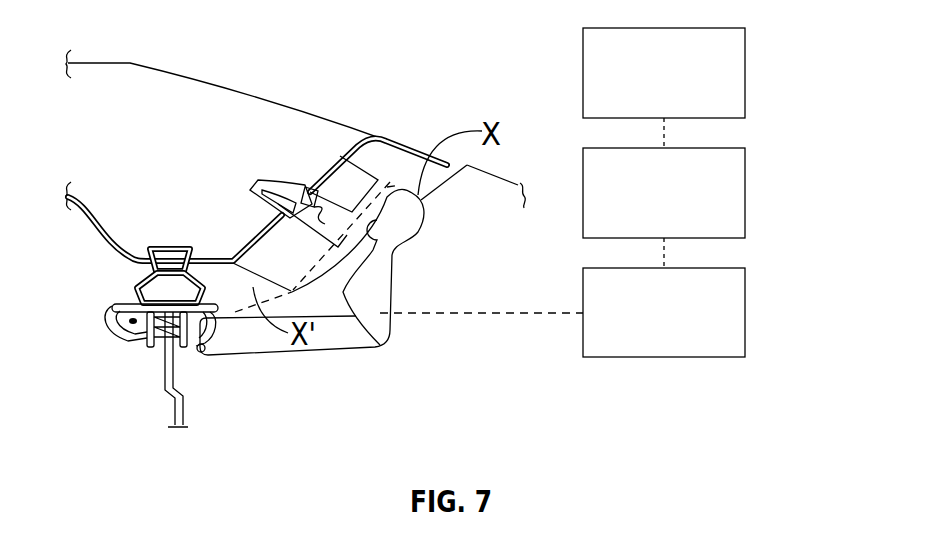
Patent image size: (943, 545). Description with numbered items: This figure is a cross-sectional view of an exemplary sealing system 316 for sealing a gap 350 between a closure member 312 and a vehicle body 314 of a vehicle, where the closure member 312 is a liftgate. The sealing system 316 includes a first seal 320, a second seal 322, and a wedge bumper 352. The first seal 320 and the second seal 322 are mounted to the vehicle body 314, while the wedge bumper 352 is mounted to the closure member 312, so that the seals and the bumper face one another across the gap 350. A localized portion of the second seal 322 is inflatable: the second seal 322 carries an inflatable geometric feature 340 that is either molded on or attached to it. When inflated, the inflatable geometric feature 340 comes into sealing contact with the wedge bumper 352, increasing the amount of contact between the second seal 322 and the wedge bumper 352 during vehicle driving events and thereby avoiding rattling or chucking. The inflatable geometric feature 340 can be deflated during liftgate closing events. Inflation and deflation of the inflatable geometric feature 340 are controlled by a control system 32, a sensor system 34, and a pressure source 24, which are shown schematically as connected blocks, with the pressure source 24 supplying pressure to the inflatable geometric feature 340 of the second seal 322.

The closure member 312 is at (197, 78).
The sealing system 316 is at (384, 152).
The wedge bumper 352 is at (345, 177).
The inflatable geometric feature 340 is at (377, 220).
The vehicle body 314 is at (390, 263).
The second seal 322 is at (382, 344).
The gap 350 is at (223, 290).
The first seal 320 is at (135, 288).
The sensor system 34 is at (746, 72).
The control system 32 is at (746, 192).
The pressure source 24 is at (746, 313).